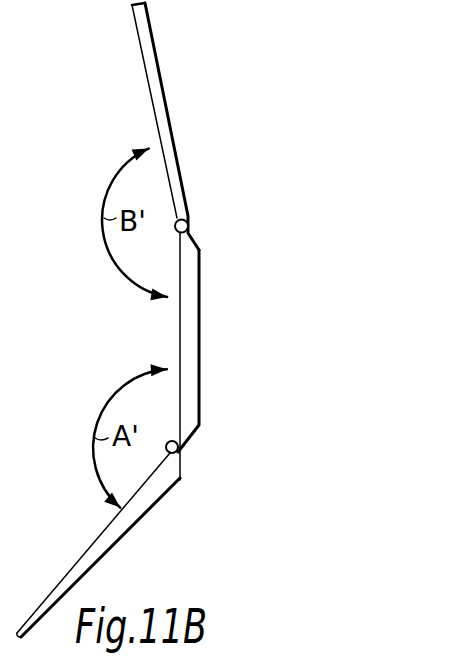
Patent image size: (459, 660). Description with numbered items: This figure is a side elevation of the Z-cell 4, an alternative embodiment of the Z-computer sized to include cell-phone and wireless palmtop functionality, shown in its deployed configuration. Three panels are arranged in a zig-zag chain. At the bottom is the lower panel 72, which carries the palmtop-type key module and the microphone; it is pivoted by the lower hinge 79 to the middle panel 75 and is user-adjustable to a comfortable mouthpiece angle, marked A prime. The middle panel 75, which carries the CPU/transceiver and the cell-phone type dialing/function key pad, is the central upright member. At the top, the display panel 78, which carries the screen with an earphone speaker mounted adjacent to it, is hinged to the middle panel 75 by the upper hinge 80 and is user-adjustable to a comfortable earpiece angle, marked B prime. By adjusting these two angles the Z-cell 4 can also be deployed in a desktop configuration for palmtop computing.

The Z-cell 4 is at (125, 335).
The lower panel 72 is at (74, 568).
The middle panel 75 is at (200, 332).
The display panel 78 is at (153, 100).
The lower hinge 79 is at (178, 451).
The upper hinge 80 is at (189, 226).